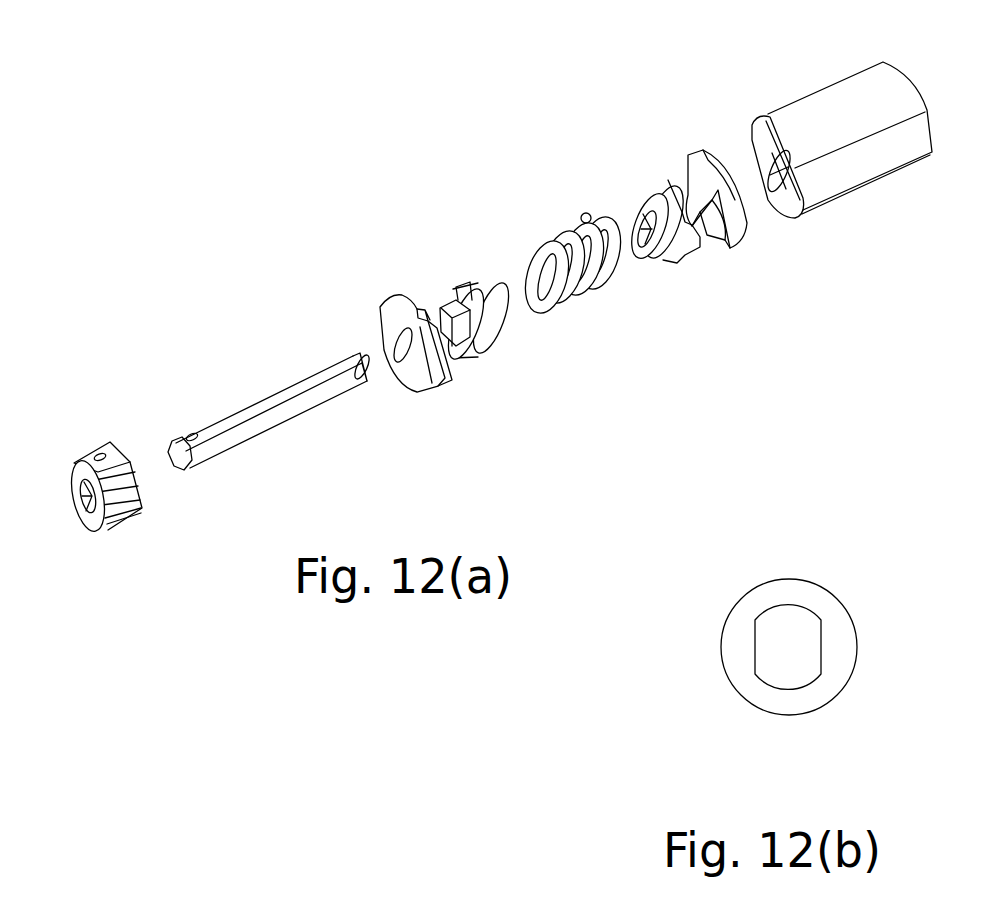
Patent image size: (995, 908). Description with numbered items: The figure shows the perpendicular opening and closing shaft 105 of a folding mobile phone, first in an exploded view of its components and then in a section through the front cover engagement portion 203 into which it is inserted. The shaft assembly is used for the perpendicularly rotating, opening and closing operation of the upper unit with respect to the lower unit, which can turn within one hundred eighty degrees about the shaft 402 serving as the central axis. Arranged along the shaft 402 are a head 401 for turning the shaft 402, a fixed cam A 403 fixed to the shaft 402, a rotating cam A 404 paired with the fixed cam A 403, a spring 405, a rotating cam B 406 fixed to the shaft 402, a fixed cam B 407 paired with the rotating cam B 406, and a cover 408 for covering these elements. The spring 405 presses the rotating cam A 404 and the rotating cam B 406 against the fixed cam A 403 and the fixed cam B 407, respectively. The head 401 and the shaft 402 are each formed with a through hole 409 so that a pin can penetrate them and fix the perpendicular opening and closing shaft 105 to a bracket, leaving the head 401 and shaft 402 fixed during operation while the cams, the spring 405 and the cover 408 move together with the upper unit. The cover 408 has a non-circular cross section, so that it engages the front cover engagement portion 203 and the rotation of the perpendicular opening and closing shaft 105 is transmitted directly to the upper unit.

In FIG. 12A, the perpendicular opening and closing shaft 105 is at (723, 378).
In FIG. 12B, the perpendicular opening and closing shaft 105 is at (775, 668).
In FIG. 12B, the front cover engagement portion 203 is at (812, 598).
In FIG. 12A, the head 401 is at (128, 520).
In FIG. 12A, the shaft 402 is at (262, 418).
In FIG. 12A, the fixed cam A 403 is at (423, 392).
In FIG. 12A, the rotating cam A 404 is at (458, 290).
In FIG. 12A, the spring 405 is at (590, 300).
In FIG. 12A, the rotating cam B 406 is at (693, 248).
In FIG. 12A, the fixed cam B 407 is at (707, 160).
In FIG. 12A, the cover 408 is at (827, 122).
In FIG. 12B, the cover 408 is at (820, 677).
In FIG. 12A, the through hole 409 is at (97, 452).